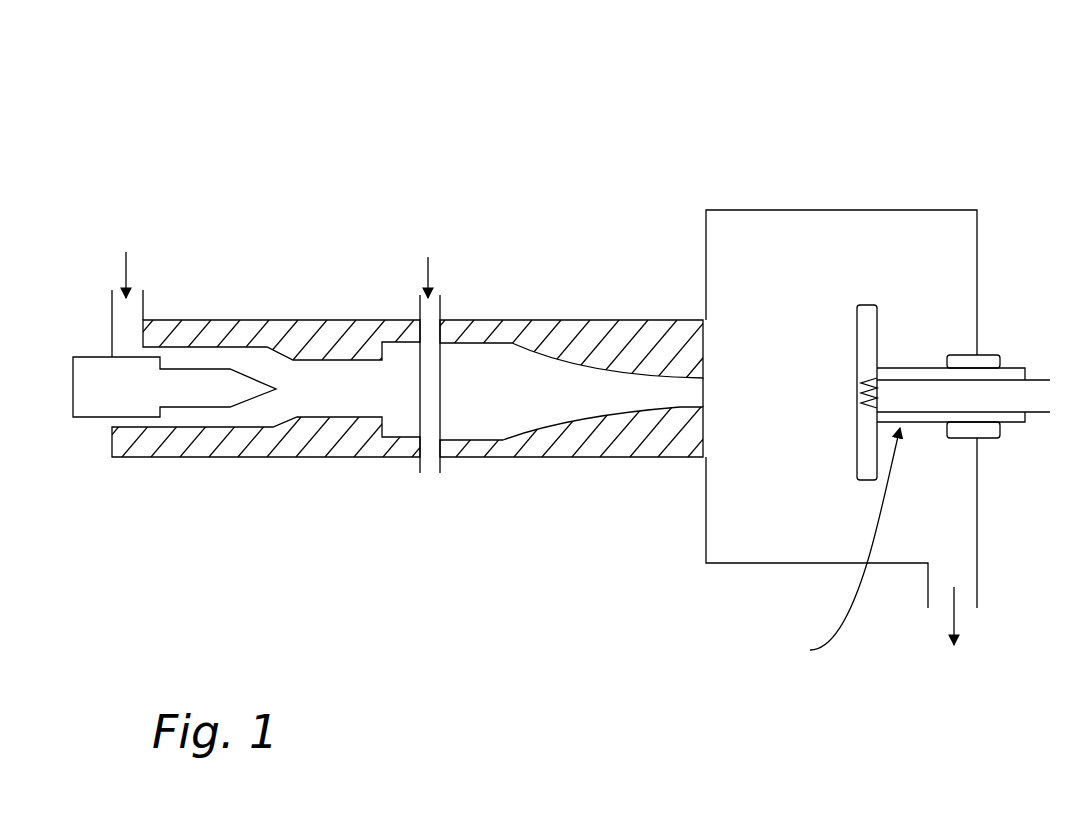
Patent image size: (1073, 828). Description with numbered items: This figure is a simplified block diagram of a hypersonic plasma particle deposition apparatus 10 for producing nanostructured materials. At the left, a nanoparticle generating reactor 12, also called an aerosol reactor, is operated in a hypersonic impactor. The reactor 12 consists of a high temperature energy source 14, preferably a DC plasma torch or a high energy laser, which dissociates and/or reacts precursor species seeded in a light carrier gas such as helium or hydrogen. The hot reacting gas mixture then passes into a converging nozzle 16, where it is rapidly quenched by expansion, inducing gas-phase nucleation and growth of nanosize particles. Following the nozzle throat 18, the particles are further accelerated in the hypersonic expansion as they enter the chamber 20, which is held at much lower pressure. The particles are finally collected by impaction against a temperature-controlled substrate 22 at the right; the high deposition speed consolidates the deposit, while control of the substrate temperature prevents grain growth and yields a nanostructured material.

The apparatus 10 is at (922, 88).
The nanoparticle generating reactor 12 is at (253, 312).
The high temperature energy source 14 is at (208, 392).
The converging nozzle 16 is at (569, 314).
The nozzle throat 18 is at (680, 390).
The chamber 20 is at (792, 277).
The temperature-controlled substrate 22 is at (902, 307).